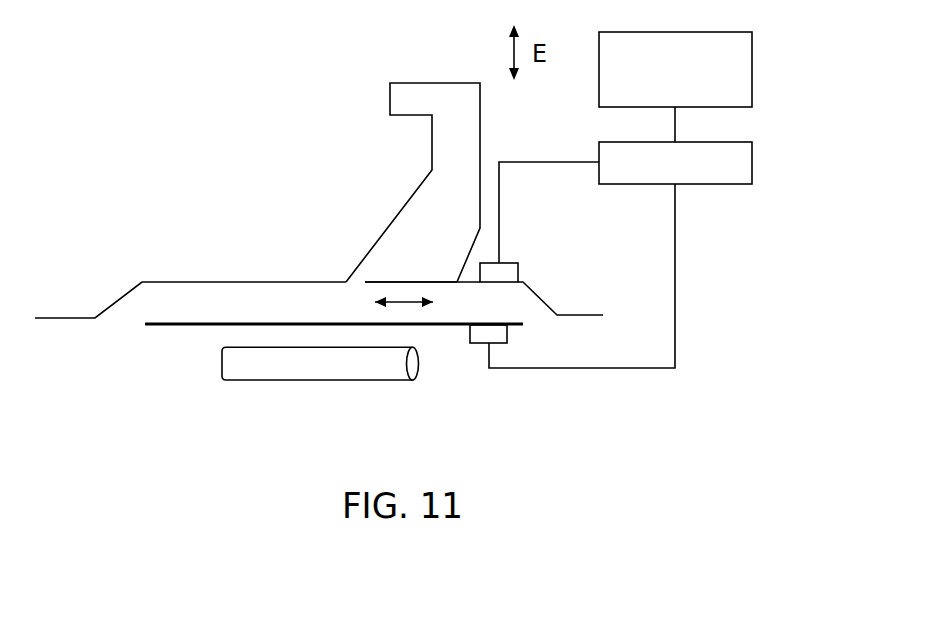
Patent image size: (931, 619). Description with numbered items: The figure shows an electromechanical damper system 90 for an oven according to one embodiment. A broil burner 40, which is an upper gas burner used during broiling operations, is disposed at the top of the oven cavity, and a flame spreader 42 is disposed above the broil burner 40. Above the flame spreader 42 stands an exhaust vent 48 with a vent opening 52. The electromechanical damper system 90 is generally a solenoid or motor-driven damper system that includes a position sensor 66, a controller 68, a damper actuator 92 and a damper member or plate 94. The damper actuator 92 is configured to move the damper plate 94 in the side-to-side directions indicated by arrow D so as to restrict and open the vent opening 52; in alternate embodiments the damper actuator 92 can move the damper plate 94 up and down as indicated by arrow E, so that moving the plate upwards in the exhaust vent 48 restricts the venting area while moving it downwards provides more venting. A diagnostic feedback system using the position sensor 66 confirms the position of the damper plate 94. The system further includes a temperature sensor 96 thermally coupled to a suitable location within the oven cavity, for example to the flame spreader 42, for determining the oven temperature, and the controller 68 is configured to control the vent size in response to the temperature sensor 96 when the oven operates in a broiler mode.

The broil burner 40 is at (413, 363).
The flame spreader 42 is at (177, 323).
The exhaust vent 48 is at (390, 98).
The vent opening 52 is at (390, 268).
The position sensor 66 is at (752, 85).
The controller 68 is at (752, 163).
The electromechanical damper system 90 is at (516, 246).
The damper actuator 92 is at (520, 274).
The damper plate 94 is at (427, 282).
The temperature sensor 96 is at (507, 333).